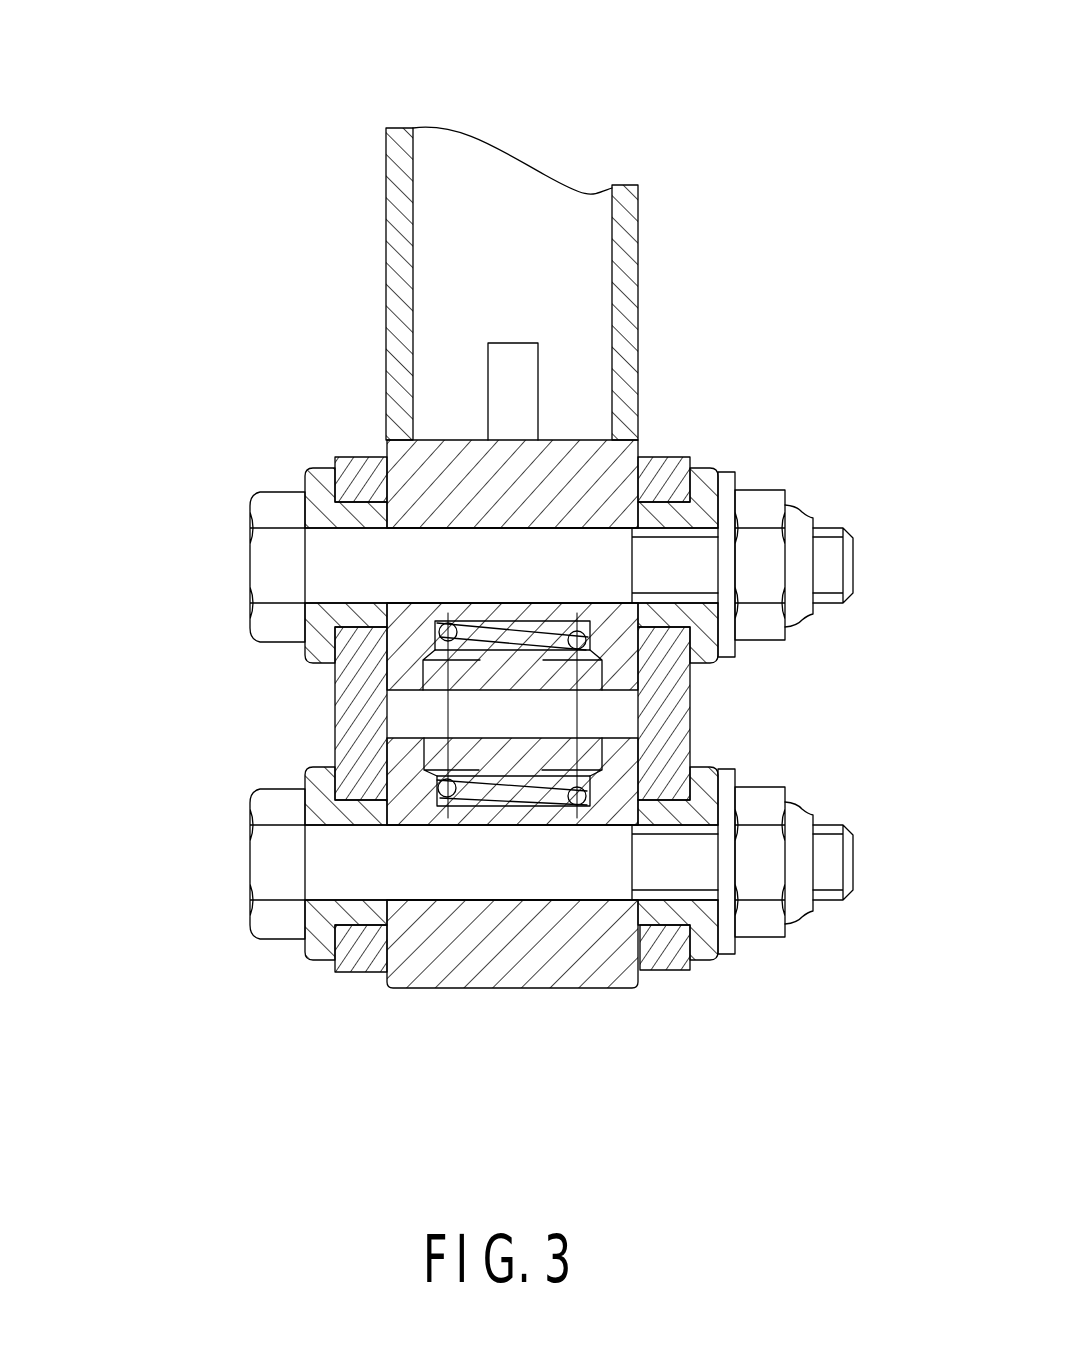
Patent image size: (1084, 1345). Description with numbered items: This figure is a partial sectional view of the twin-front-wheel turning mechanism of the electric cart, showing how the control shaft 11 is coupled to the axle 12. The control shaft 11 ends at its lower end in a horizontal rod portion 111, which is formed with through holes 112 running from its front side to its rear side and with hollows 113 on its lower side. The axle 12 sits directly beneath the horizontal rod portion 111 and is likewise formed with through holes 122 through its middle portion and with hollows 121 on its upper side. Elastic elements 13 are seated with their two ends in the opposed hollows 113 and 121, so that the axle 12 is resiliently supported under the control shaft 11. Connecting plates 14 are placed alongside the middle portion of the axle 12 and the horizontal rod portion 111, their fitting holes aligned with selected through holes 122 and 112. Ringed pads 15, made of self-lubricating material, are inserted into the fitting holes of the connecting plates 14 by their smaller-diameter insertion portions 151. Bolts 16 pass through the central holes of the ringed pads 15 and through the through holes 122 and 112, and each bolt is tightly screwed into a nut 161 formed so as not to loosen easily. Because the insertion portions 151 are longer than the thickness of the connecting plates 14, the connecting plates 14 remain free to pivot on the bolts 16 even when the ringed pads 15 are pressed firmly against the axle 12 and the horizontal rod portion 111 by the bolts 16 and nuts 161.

The control shaft 11 is at (568, 197).
The horizontal rod portion 111 is at (453, 455).
The through holes 112 is at (556, 528).
The hollows 113 is at (435, 680).
The axle 12 is at (585, 967).
The hollows 121 is at (438, 753).
The through holes 122 is at (460, 886).
The elastic elements 13 is at (583, 643).
The connecting plates 14 is at (335, 653).
The ringed pads 15 is at (317, 947).
The insertion portion 151 is at (659, 940).
The bolts 16 is at (417, 878).
The nut 161 is at (767, 930).